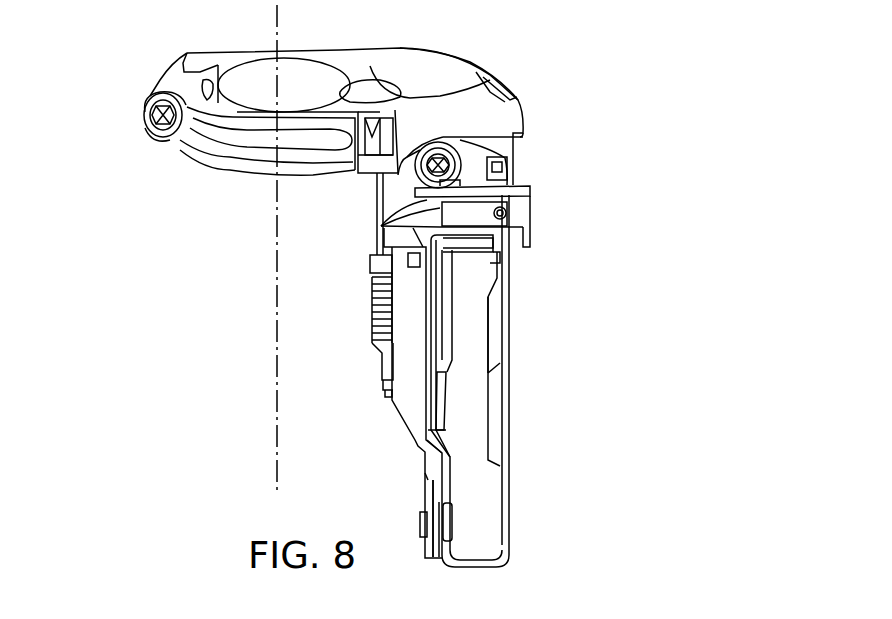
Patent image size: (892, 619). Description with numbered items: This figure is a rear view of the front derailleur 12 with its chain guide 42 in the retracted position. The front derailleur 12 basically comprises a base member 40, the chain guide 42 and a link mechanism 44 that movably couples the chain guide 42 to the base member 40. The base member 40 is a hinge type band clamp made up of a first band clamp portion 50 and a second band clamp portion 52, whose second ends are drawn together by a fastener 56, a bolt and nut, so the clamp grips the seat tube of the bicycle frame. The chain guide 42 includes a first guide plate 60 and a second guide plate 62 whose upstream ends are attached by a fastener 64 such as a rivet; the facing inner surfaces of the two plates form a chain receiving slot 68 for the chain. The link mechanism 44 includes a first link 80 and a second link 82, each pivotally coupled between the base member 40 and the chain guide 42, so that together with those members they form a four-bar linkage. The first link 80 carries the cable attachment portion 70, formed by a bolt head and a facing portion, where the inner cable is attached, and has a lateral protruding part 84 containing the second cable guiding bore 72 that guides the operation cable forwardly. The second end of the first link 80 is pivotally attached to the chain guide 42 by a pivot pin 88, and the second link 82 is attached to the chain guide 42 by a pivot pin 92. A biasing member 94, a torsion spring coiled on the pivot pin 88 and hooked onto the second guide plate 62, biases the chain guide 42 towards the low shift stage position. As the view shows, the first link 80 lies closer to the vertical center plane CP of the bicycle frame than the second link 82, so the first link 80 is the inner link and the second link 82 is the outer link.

The front derailleur 12 is at (570, 84).
The base member 40 is at (354, 46).
The chain guide 42 is at (509, 324).
The link mechanism 44 is at (381, 226).
The first band clamp portion 50 is at (443, 60).
The second band clamp portion 52 is at (232, 168).
The fastener 56 is at (146, 122).
The first guide plate 60 is at (511, 485).
The second guide plate 62 is at (432, 460).
The fastener 64 is at (452, 528).
The chain receiving slot 68 is at (467, 405).
The cable attachment portion 70 is at (438, 152).
The second cable guiding bore 72 is at (507, 166).
The first link 80 is at (392, 186).
The second link 82 is at (495, 218).
The lateral protruding part 84 is at (470, 166).
The pivot pin 88 is at (390, 398).
The pivot pin 92 is at (530, 189).
The biasing member 94 is at (372, 303).
The vertical center plane CP is at (277, 381).